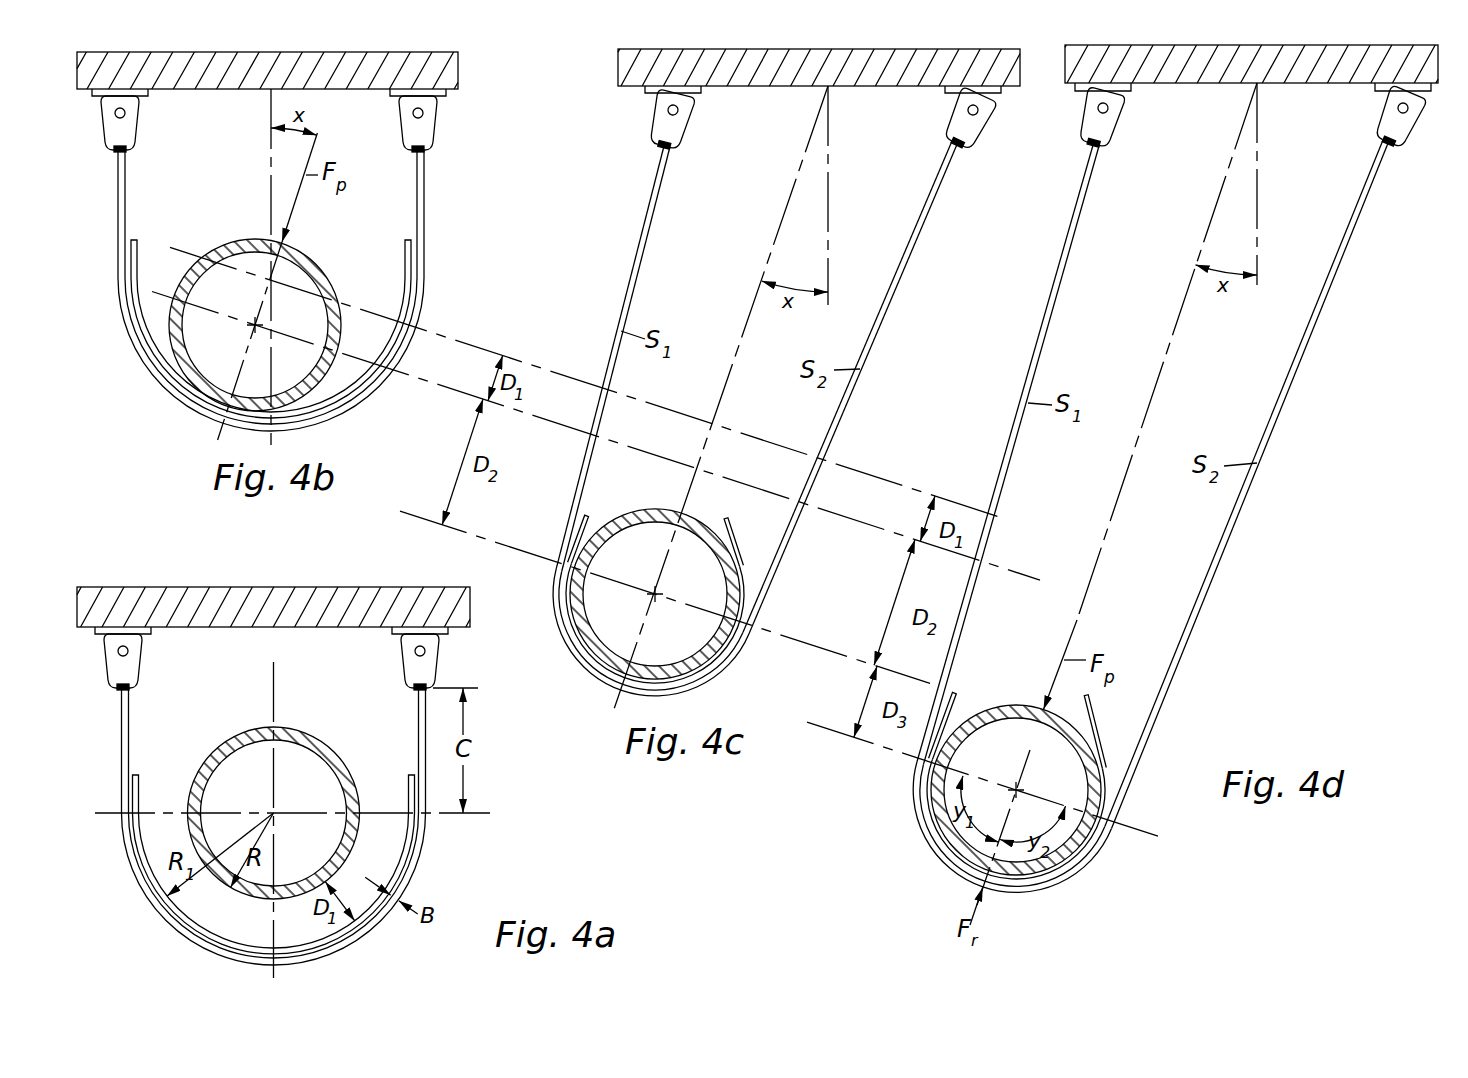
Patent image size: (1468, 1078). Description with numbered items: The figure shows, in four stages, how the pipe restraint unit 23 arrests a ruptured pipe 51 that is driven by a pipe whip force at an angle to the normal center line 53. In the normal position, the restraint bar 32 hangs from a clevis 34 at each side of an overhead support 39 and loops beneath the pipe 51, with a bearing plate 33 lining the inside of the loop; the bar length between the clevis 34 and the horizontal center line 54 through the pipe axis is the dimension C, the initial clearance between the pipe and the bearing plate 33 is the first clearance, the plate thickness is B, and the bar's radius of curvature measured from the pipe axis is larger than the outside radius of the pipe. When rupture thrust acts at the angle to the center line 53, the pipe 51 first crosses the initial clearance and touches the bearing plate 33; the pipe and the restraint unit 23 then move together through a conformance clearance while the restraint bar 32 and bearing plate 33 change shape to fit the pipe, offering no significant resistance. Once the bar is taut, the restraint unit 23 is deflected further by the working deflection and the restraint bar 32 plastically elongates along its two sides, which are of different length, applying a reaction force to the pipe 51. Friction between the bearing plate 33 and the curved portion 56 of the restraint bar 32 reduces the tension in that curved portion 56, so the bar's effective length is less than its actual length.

In FIG. 4A, the pipe restraint unit 23 is at (118, 742).
In FIG. 4A, the restraint bar 32 is at (416, 731).
In FIG. 4B, the restraint bar 32 is at (415, 195).
In FIG. 4C, the restraint bar 32 is at (636, 249).
In FIG. 4D, the restraint bar 32 is at (1312, 340).
In FIG. 4A, the bearing plate 33 is at (136, 812).
In FIG. 4B, the bearing plate 33 is at (411, 279).
In FIG. 4A, the clevis 34 is at (440, 663).
In FIG. 4A, the support structure 39 is at (470, 619).
In FIG. 4B, the support structure 39 is at (458, 76).
In FIG. 4C, the support structure 39 is at (620, 79).
In FIG. 4D, the support structure 39 is at (1066, 80).
In FIG. 4A, the pipe 51 is at (235, 735).
In FIG. 4B, the pipe 51 is at (228, 242).
In FIG. 4C, the pipe 51 is at (632, 514).
In FIG. 4D, the pipe 51 is at (999, 706).
In FIG. 4A, the center line 53 is at (278, 668).
In FIG. 4B, the center line 53 is at (270, 117).
In FIG. 4C, the center line 53 is at (831, 148).
In FIG. 4D, the center line 53 is at (1260, 140).
In FIG. 4A, the center line 54 is at (447, 815).
In FIG. 4D, the curved portion 56 is at (1078, 867).